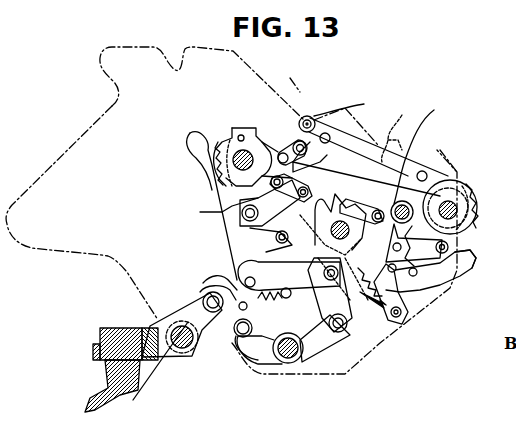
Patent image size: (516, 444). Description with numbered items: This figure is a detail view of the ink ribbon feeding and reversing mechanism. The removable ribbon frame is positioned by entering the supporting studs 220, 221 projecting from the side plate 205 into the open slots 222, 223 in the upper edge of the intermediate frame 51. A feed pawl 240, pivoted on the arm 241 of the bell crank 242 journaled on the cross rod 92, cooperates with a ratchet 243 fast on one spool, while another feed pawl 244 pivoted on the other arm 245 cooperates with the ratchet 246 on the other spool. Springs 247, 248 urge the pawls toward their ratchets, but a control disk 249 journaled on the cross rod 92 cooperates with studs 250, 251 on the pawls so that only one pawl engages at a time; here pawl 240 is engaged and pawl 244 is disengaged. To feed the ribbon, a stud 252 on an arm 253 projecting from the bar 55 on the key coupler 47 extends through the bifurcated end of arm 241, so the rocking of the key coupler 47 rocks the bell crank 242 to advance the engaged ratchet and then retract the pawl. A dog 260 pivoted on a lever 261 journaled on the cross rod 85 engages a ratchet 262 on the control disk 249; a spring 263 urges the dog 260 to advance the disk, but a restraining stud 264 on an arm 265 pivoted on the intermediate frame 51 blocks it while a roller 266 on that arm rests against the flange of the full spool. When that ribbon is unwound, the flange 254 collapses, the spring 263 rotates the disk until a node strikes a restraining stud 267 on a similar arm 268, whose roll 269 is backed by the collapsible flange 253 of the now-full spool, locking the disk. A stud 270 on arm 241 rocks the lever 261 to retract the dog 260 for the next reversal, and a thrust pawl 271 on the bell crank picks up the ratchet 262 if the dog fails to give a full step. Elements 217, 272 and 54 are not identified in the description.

The intermediate frame 51 is at (100, 116).
The open slot 222 is at (293, 78).
The ratchet 243 is at (222, 146).
The collapsible flange 253 is at (226, 184).
The feed pawl 240 is at (212, 212).
The restraining arm 268 is at (224, 218).
The pivot pin 217 is at (294, 138).
The supporting stud 220 is at (312, 121).
The side plate 205 is at (374, 103).
The control disk 249 is at (345, 170).
The open slot 223 is at (401, 130).
The supporting stud 221 is at (434, 112).
The thrust pawl 271 is at (410, 198).
The guide 272 is at (418, 172).
The collapsible flange 254 is at (466, 192).
The ratchet 246 is at (478, 210).
The ratchet 262 is at (368, 200).
The restraining stud 267 is at (310, 188).
The roll 269 is at (282, 193).
The bell crank 242 is at (338, 208).
The cross rod 92 is at (338, 237).
The stud 250 is at (272, 240).
The arm 241 is at (278, 275).
The dog 260 is at (316, 294).
The spring 263 is at (344, 334).
The lever 261 is at (312, 345).
The cross rod 85 is at (288, 363).
The spring 247 is at (266, 302).
The stud 270 is at (240, 335).
The stud 252 is at (203, 303).
The shaft 54 is at (188, 352).
The bar 55 is at (128, 330).
The key coupler 47 is at (136, 395).
The restraining stud 264 is at (414, 250).
The stud 251 is at (441, 252).
The roller 266 is at (448, 247).
The restraining arm 265 is at (470, 259).
The feed pawl 244 is at (470, 274).
The spring 248 is at (401, 300).
The arm 245 is at (372, 306).